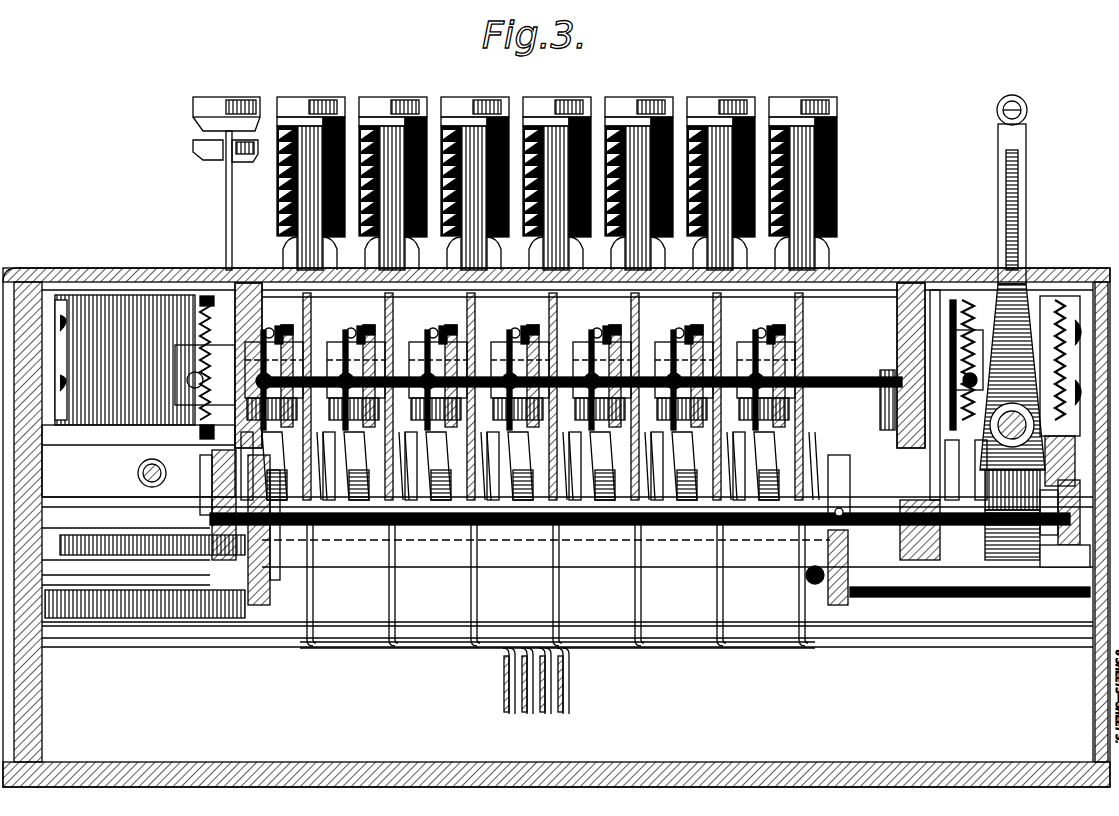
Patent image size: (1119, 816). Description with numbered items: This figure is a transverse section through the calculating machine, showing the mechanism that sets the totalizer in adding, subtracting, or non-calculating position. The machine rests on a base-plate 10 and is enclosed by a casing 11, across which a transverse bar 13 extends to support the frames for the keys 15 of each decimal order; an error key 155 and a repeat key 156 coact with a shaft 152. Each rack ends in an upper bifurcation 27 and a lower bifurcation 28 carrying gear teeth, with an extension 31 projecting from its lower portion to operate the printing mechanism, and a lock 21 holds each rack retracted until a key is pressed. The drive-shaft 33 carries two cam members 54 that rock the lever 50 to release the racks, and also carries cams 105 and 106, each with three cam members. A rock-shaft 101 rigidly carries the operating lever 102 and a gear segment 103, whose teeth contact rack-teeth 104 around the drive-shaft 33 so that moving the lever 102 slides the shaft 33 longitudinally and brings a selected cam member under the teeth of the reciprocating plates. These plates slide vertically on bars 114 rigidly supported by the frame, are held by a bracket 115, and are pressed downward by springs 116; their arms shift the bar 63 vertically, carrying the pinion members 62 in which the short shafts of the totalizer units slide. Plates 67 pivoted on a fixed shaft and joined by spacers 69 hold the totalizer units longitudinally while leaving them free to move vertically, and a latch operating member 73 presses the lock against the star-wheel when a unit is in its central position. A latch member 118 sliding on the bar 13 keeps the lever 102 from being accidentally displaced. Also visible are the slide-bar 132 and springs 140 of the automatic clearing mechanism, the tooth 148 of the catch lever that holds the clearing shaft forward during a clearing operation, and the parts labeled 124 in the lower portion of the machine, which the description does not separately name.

The base-plate 10 is at (214, 735).
The casing 11 is at (195, 264).
The transverse bar 13 is at (92, 290).
The keys 15 is at (765, 100).
The lock 21 is at (545, 480).
The upper bifurcation 27 is at (300, 302).
The lower bifurcation 28 is at (610, 447).
The extension 31 is at (562, 738).
The drive-shaft 33 is at (845, 512).
The lever 50 is at (292, 435).
The cam member 54 is at (283, 600).
The pinion member 62 is at (540, 342).
The bar 63 is at (322, 366).
The plate 67 is at (296, 325).
The spacer 69 is at (723, 381).
The latch operating member 73 is at (448, 362).
The rock-shaft 101 is at (1006, 450).
The operating lever 102 is at (1065, 219).
The gear segment 103 is at (940, 472).
The rack-teeth 104 is at (1030, 559).
The cam 105 is at (940, 588).
The cam 106 is at (208, 468).
The bars 114 is at (282, 261).
The bracket 115 is at (962, 300).
The spring 116 is at (207, 318).
The latch member 118 is at (1055, 300).
The pipes 124 is at (372, 586).
The slide-bar 132 is at (883, 400).
The spring 140 is at (1035, 568).
The tooth 148 is at (1090, 583).
The shaft 152 is at (137, 476).
The error key 155 is at (260, 85).
The repeat key 156 is at (208, 148).